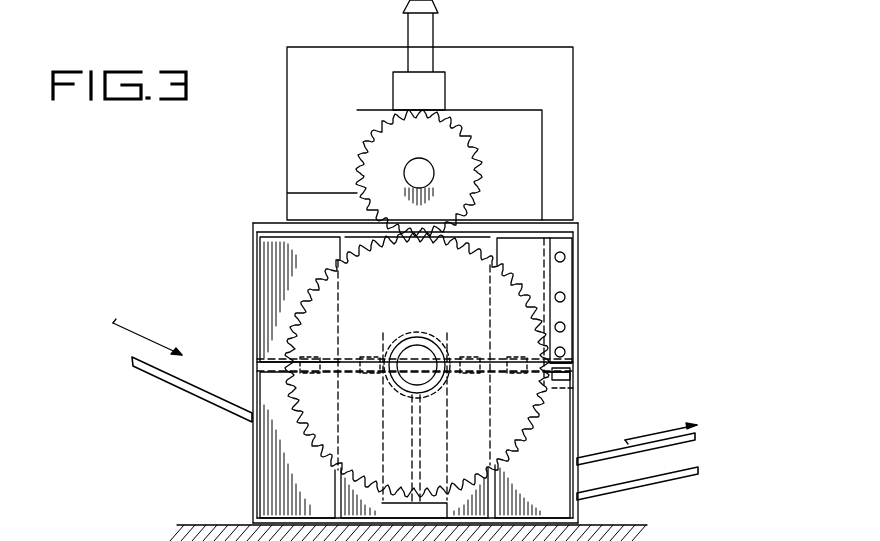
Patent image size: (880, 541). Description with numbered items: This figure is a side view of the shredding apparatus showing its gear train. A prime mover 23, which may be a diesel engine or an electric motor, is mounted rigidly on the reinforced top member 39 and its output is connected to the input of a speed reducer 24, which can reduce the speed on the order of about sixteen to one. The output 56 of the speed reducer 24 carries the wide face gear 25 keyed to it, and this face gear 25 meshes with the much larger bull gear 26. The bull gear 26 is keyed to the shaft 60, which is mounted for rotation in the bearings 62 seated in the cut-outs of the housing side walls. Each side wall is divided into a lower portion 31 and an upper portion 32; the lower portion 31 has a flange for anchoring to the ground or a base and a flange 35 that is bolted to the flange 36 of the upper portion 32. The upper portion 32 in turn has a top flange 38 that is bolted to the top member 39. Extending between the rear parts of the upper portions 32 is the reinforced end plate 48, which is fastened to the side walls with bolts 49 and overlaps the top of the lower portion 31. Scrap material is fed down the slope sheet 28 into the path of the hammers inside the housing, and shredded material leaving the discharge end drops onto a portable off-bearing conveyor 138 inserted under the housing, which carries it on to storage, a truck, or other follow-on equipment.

The prime mover 23 is at (435, 80).
The speed reducer 24 is at (522, 135).
The wide face gear 25 is at (462, 200).
The output of the speed reducer 56 is at (420, 172).
The top member 39 is at (576, 228).
The upper portion 32 is at (253, 271).
The lower portion 31 is at (253, 473).
The top flange 38 is at (520, 240).
The reinforced end plate 48 is at (558, 278).
The bolts 49 is at (563, 327).
The flange 35 is at (562, 362).
The flange 36 is at (558, 376).
The bull gear 26 is at (512, 418).
The shaft 60 is at (423, 357).
The bearings 62 is at (407, 348).
The slope sheet 28 is at (207, 397).
The portable off-bearing conveyor 138 is at (657, 487).